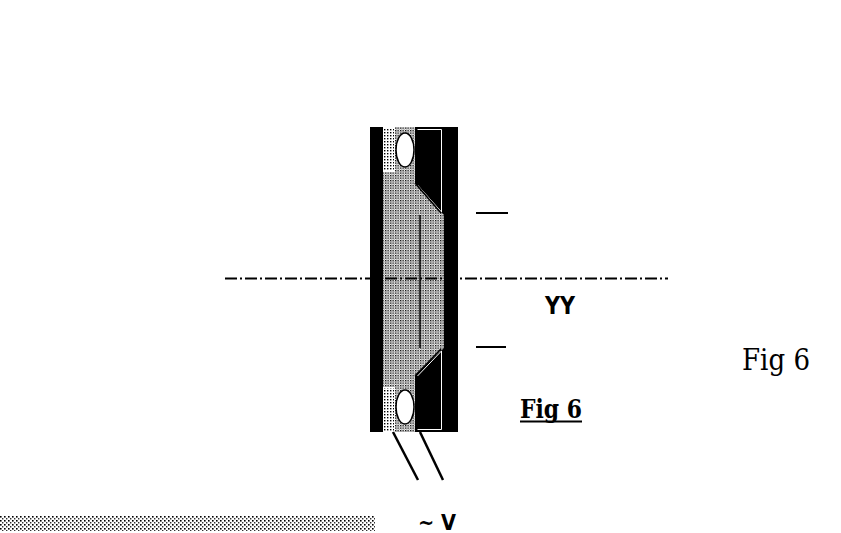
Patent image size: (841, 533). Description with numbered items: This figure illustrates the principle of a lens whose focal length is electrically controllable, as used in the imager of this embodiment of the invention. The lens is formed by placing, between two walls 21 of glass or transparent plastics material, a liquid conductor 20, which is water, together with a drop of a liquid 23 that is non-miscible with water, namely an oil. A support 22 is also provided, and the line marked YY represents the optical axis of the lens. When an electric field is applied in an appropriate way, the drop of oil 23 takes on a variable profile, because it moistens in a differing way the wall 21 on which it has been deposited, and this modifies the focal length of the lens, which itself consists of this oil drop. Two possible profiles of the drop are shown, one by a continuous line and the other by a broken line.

The liquid conductor 20 is at (371, 185).
The walls 21 is at (413, 130).
The support 22 is at (452, 147).
The drop of liquid 23 is at (456, 234).